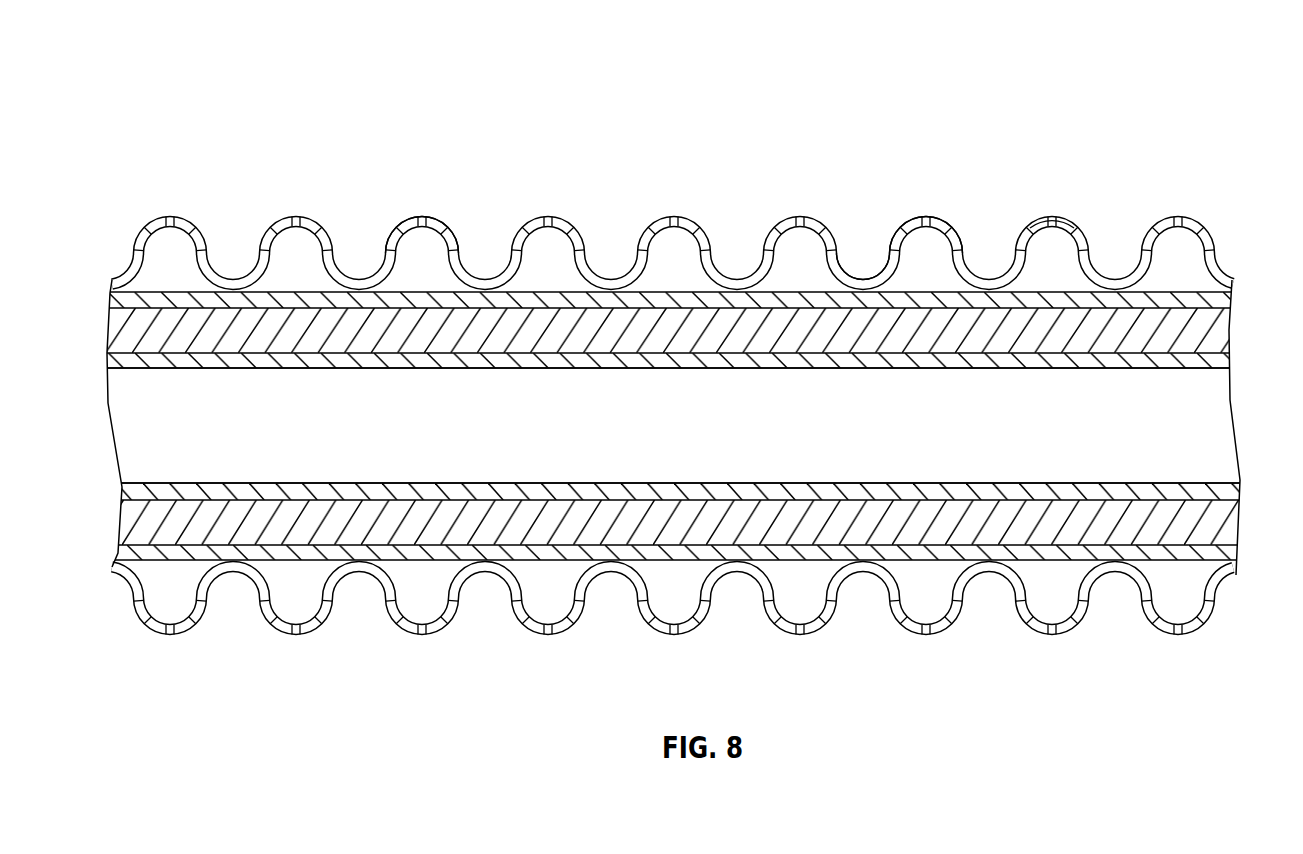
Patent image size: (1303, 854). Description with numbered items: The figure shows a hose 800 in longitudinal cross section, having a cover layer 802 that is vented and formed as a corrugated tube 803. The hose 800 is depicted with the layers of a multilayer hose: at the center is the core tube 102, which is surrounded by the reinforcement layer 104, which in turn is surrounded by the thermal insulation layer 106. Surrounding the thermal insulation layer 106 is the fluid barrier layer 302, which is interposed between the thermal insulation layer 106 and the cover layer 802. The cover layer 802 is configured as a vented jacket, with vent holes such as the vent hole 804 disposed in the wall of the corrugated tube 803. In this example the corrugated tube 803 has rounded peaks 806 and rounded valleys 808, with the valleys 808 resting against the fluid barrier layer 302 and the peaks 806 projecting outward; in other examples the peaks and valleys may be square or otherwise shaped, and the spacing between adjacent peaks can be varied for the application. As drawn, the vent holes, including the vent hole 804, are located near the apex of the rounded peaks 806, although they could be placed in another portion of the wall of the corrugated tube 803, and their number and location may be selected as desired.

The hose 800 is at (848, 113).
The cover layer 802 is at (1077, 204).
The corrugated tube 803 is at (438, 226).
The vent hole 804 is at (1050, 219).
The rounded peaks 806 is at (921, 203).
The rounded valleys 808 is at (856, 268).
The fluid barrier layer 302 is at (1237, 300).
The thermal insulation layer 106 is at (1226, 335).
The reinforcement layer 104 is at (1222, 362).
The core tube 102 is at (1160, 370).